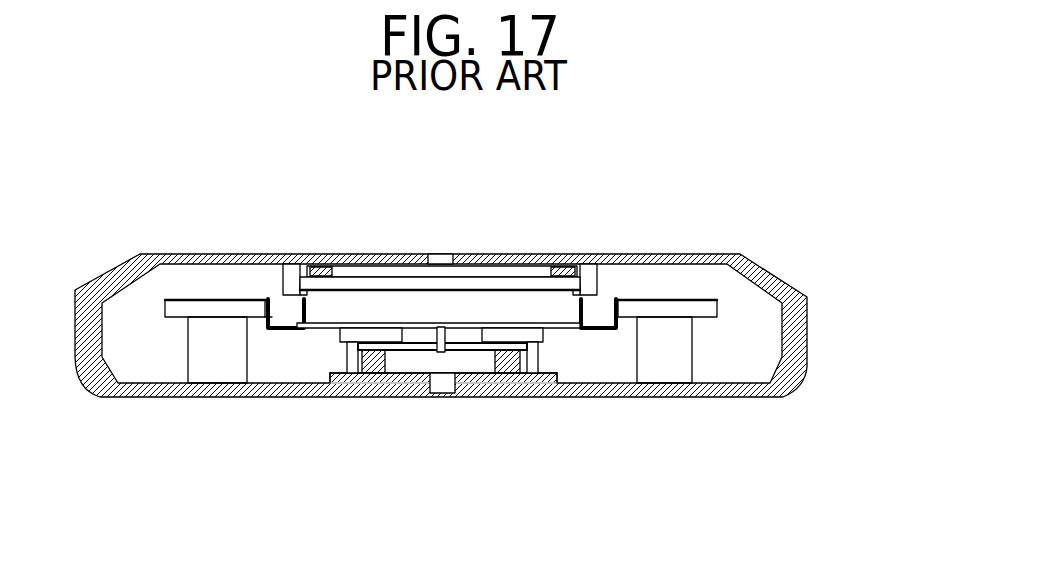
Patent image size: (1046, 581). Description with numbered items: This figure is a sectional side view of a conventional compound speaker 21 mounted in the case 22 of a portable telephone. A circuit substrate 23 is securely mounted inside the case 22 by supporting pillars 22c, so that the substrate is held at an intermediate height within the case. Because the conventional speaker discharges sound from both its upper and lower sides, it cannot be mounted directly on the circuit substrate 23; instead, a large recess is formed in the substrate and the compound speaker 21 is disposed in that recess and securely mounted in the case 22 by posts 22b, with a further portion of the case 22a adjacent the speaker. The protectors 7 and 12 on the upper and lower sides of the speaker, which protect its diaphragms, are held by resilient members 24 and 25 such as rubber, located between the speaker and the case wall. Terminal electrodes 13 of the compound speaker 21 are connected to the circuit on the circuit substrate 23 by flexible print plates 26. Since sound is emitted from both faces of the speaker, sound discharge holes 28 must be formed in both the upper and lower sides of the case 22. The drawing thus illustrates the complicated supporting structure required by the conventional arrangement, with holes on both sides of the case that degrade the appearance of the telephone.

The case 22 is at (103, 398).
The housing upper holding portion 22a is at (284, 274).
The posts 22b is at (531, 360).
The supporting pillars 22c is at (227, 365).
The circuit substrate 23 is at (180, 305).
The terminal electrodes 13 is at (603, 320).
The resilient member 24 is at (303, 268).
The protector 7 is at (360, 275).
The compound speaker 21 is at (418, 279).
The sound discharge holes 28 is at (442, 260).
The resilient member 25 is at (385, 377).
The protector 12 is at (493, 343).
The flexible print plates 26 is at (602, 333).